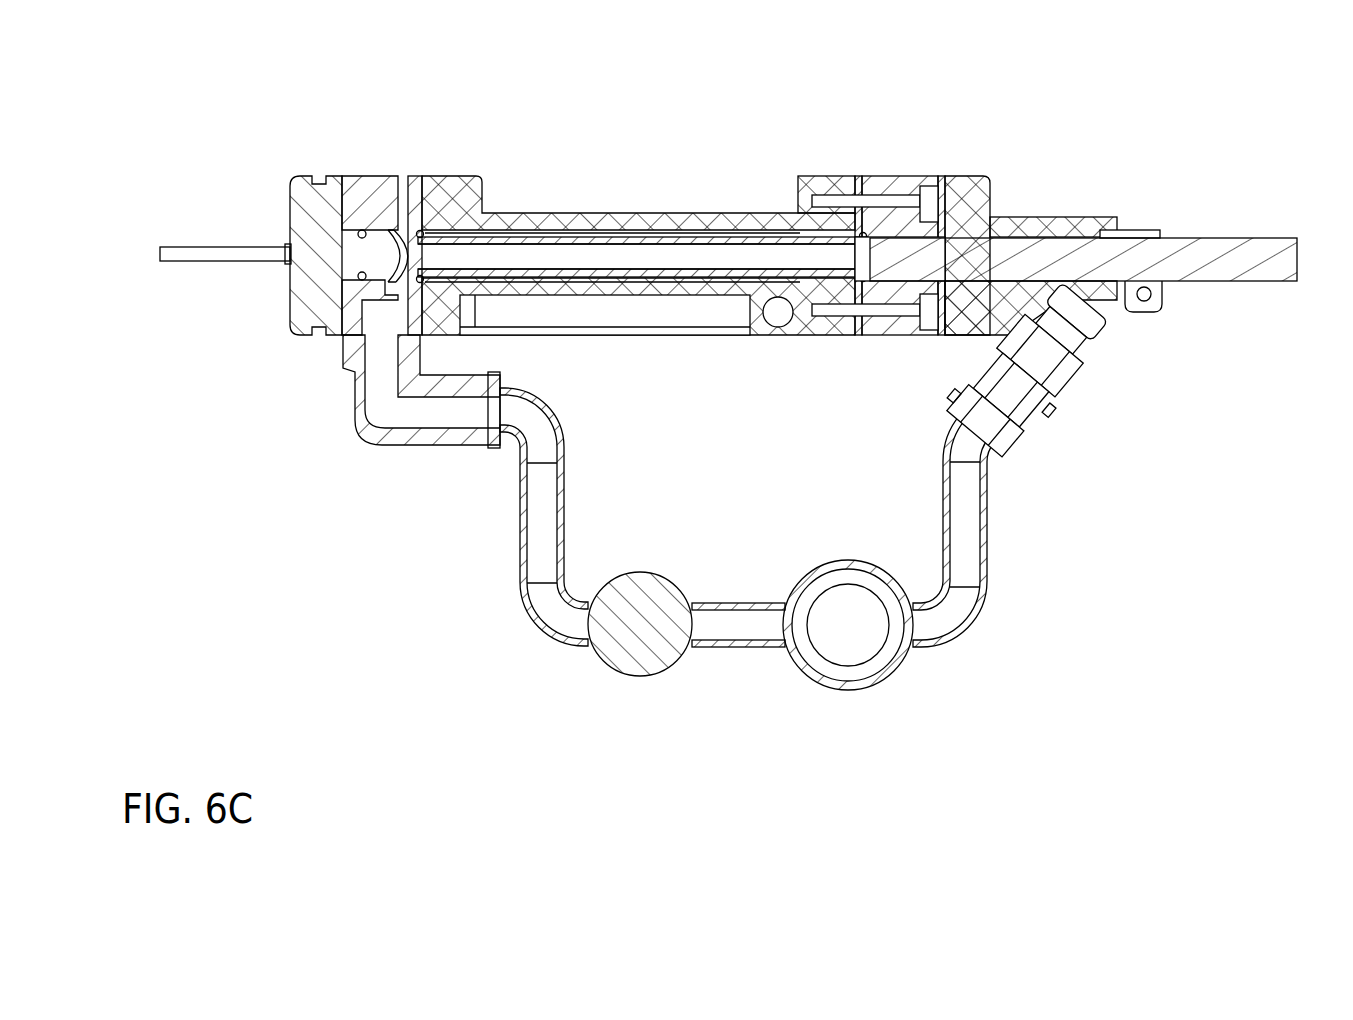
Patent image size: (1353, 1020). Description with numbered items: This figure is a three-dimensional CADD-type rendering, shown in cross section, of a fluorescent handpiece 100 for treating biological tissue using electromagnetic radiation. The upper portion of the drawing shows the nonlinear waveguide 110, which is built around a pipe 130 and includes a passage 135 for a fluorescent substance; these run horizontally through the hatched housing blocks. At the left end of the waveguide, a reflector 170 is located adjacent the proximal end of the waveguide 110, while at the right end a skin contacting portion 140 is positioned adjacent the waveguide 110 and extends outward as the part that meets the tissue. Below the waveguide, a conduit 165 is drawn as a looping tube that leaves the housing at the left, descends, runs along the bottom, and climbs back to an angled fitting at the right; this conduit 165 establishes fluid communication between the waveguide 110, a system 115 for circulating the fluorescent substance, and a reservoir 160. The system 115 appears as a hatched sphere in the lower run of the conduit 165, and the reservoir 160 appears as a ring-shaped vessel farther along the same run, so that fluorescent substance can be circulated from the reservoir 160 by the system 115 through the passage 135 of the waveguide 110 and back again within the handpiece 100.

The fluorescent handpiece 100 is at (741, 417).
The nonlinear waveguide 110 is at (697, 224).
The system for circulating a fluorescent substance 115 is at (633, 677).
The pipe 130 is at (621, 245).
The passage 135 is at (546, 250).
The skin contacting portion 140 is at (1247, 237).
The reservoir 160 is at (838, 692).
The conduit 165 is at (545, 520).
The reflector 170 is at (398, 248).